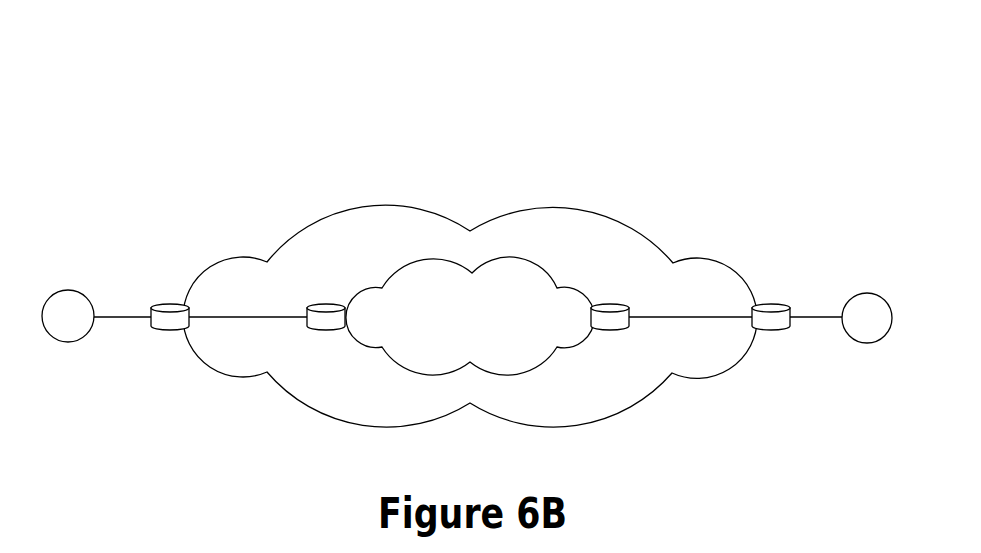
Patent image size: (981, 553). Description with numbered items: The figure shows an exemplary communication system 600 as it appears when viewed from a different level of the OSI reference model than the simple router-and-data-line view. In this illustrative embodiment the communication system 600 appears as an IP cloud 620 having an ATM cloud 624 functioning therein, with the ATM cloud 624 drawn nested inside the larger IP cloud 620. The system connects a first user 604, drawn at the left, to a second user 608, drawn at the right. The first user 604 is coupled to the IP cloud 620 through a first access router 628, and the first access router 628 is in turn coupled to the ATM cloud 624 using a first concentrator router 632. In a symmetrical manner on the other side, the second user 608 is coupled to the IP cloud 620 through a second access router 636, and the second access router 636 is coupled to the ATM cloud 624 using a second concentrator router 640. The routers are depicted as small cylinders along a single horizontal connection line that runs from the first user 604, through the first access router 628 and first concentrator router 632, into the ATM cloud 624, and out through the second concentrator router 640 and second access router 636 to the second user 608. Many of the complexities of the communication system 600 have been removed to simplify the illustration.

The communication system 600 is at (272, 97).
The first user 604 is at (83, 338).
The second user 608 is at (855, 341).
The IP cloud 620 is at (555, 208).
The ATM cloud 624 is at (438, 258).
The first access router 628 is at (153, 303).
The first concentrator router 632 is at (313, 303).
The second access router 636 is at (768, 304).
The second concentrator router 640 is at (612, 304).